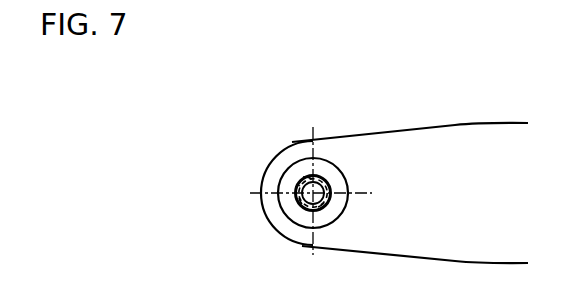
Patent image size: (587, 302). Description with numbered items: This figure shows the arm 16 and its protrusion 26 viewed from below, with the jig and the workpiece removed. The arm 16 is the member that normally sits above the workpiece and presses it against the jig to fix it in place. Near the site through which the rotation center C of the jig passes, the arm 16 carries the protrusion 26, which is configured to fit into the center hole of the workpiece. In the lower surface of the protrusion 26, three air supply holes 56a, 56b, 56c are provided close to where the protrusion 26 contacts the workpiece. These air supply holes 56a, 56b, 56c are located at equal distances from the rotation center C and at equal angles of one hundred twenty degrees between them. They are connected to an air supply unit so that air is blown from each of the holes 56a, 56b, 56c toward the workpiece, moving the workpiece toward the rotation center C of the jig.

The arm 16 is at (382, 142).
The protrusion 26 is at (323, 178).
The rotation center C is at (296, 184).
The air supply hole 56a is at (308, 180).
The air supply hole 56b is at (301, 203).
The air supply hole 56c is at (318, 207).